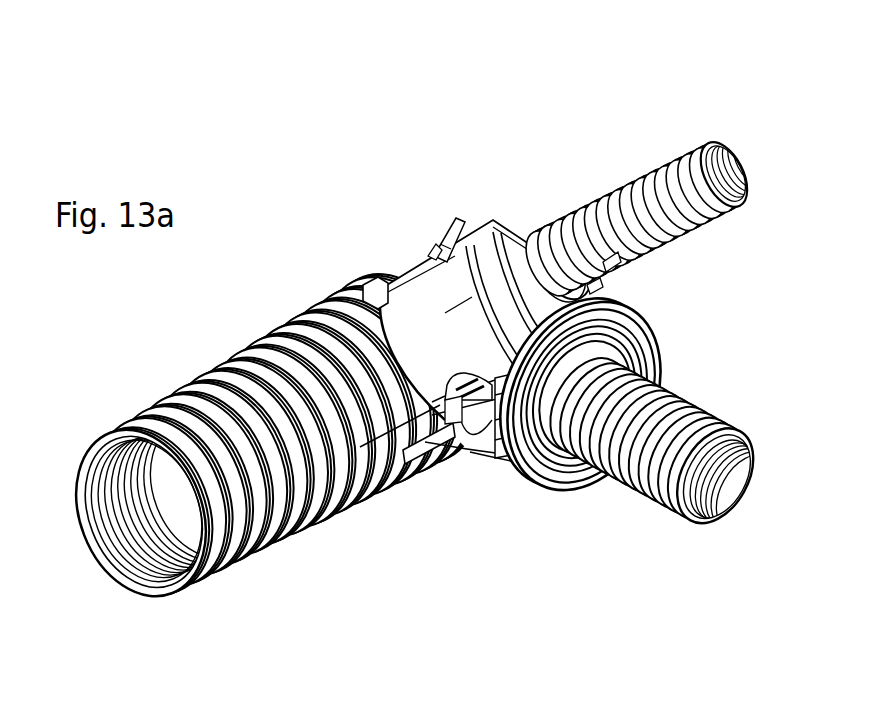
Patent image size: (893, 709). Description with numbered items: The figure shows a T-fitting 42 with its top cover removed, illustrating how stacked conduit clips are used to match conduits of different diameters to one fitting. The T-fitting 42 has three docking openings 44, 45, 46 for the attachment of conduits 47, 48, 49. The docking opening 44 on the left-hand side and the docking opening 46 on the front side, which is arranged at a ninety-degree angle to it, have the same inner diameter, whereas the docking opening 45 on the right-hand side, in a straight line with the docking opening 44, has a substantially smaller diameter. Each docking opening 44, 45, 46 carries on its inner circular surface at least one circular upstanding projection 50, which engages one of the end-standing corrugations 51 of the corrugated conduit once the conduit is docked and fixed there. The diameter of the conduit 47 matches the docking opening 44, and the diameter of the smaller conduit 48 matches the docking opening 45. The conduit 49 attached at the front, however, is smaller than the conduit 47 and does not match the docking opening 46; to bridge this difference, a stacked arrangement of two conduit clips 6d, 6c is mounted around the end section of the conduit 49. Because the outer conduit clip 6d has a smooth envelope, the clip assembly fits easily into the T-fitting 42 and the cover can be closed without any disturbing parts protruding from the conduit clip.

The T-fitting 42 is at (404, 213).
The docking opening 44 is at (462, 447).
The docking opening 45 is at (528, 277).
The docking opening 46 is at (543, 483).
The conduit 47 is at (279, 427).
The conduit 48 is at (663, 165).
The conduit 49 is at (703, 390).
The circular upstanding projection 50 is at (365, 488).
The end-standing corrugation 51 is at (353, 293).
The conduit clip 6c is at (577, 470).
The conduit clip 6d is at (638, 300).